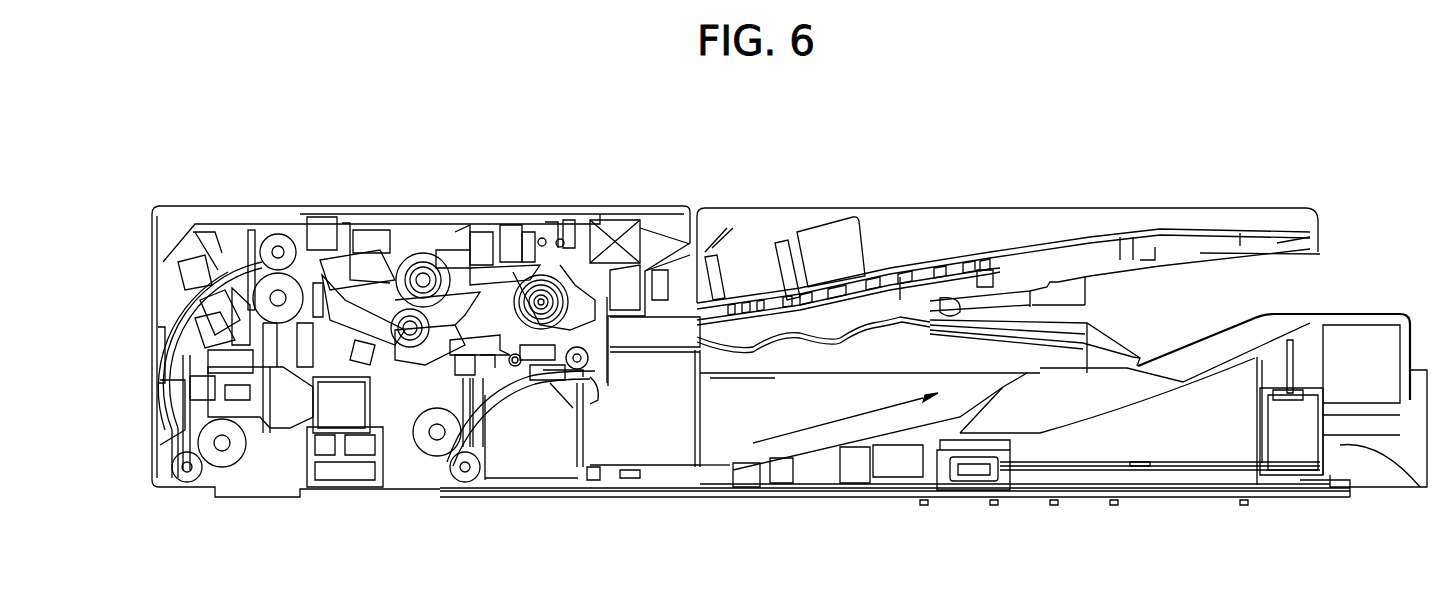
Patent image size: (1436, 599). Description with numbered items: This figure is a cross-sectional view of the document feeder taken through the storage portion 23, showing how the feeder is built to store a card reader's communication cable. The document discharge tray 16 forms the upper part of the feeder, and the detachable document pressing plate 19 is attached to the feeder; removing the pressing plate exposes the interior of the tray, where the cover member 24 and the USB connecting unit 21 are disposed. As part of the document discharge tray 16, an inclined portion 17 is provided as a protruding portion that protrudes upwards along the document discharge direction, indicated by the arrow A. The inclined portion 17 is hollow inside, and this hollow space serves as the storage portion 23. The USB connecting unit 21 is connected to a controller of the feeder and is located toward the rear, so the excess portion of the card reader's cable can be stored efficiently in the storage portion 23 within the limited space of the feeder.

The document discharge tray 16 is at (885, 397).
The inclined portion 17 is at (1192, 342).
The document pressing plate 19 is at (1082, 503).
The USB connecting unit 21 is at (972, 474).
The storage portion 23 is at (1220, 398).
The cover member 24 is at (1183, 473).